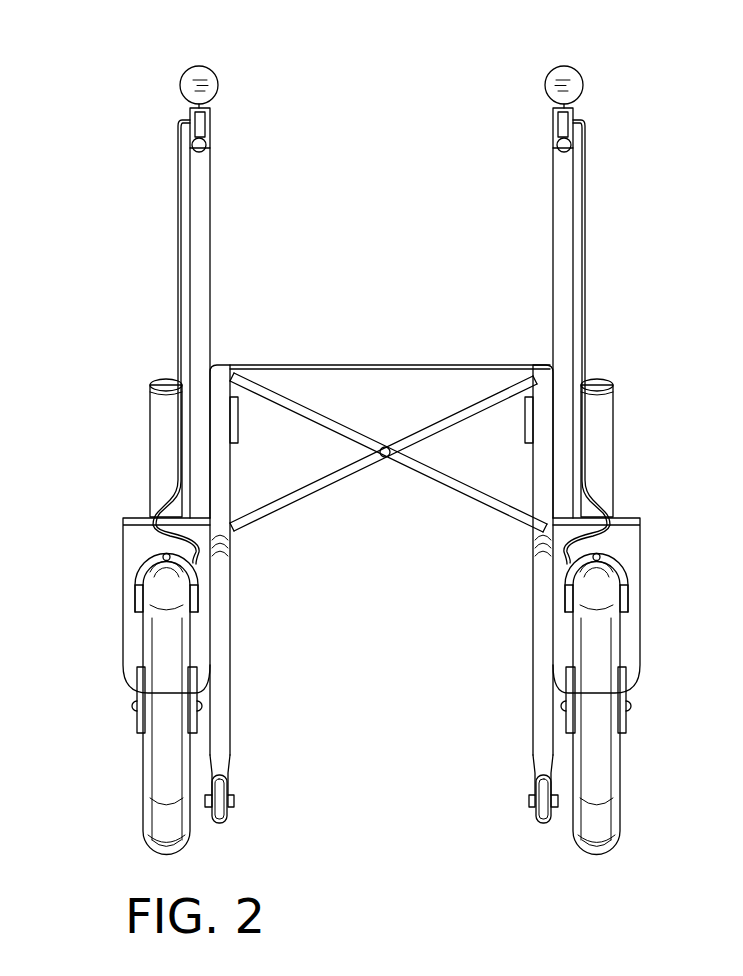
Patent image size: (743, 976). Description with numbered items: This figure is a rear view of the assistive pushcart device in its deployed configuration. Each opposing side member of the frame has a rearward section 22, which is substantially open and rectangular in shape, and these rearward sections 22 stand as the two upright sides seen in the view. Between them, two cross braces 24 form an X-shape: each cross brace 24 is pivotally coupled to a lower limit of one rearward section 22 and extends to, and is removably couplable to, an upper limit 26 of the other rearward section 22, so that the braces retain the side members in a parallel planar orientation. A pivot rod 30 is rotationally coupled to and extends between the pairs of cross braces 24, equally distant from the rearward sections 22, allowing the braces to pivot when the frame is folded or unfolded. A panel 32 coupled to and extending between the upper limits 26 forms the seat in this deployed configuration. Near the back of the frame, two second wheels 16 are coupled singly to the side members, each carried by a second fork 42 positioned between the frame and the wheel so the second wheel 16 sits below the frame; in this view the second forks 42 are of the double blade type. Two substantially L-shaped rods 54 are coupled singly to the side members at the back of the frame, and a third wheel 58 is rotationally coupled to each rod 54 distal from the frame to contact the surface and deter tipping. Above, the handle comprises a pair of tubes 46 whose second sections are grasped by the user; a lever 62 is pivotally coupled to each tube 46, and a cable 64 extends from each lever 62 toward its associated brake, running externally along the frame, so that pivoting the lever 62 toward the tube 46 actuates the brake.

The second wheels 16 is at (173, 647).
The rearward section 22 is at (218, 408).
The cross brace 24 is at (470, 422).
The upper limit 26 is at (218, 363).
The pivot rod 30 is at (380, 456).
The panel 32 is at (447, 363).
The second forks 42 is at (128, 633).
The tubes 46 is at (553, 245).
The rods 54 is at (533, 705).
The third wheels 58 is at (542, 792).
The levers 62 is at (202, 148).
The cables 64 is at (583, 290).